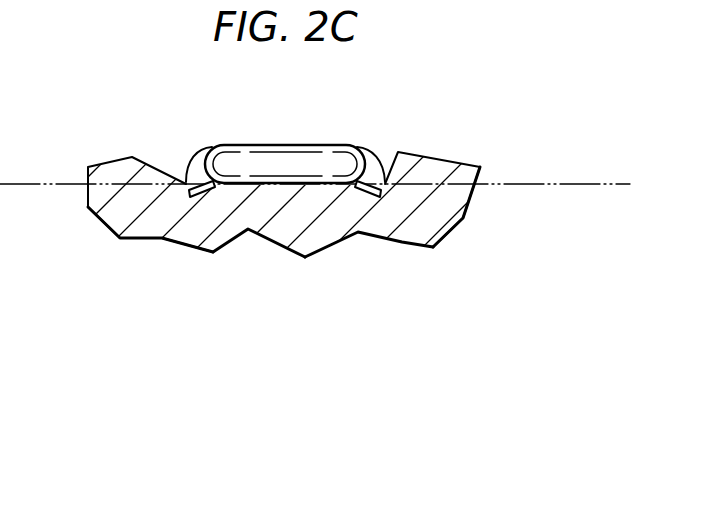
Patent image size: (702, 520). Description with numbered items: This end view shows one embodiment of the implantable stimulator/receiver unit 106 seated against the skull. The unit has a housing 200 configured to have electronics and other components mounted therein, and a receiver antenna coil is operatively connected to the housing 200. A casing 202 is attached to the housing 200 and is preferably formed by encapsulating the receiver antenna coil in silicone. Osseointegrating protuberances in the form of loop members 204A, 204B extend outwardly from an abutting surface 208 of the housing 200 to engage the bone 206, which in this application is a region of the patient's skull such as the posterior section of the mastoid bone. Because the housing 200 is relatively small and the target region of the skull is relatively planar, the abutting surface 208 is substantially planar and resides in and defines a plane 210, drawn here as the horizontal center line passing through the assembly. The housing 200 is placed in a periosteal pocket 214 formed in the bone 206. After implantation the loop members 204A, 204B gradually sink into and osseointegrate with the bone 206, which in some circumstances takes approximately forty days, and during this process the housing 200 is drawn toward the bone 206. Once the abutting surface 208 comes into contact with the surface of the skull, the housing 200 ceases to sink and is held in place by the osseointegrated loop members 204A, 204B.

The stimulator/receiver unit 106 is at (478, 118).
The housing 200 is at (293, 145).
The casing 202 is at (203, 151).
The loop member 204A is at (188, 186).
The loop member 204B is at (382, 186).
The bone 206 is at (100, 171).
The abutting surface 208 is at (285, 187).
The plane 210 is at (571, 184).
The periosteal pocket 214 is at (388, 157).